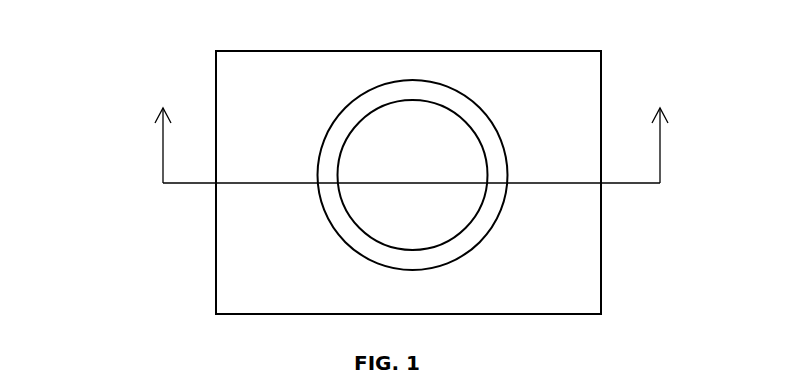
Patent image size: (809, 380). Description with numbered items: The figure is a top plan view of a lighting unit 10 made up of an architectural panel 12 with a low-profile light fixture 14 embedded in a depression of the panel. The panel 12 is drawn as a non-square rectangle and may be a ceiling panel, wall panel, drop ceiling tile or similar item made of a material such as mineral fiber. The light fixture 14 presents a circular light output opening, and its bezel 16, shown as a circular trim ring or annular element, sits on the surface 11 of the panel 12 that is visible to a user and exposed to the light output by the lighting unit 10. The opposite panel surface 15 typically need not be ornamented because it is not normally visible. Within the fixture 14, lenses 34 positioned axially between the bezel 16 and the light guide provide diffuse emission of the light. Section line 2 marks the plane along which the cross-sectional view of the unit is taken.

The lighting unit 10 is at (581, 34).
The bottom surface 11 is at (565, 213).
The architectural panel 12 is at (261, 103).
The low-profile light fixture 14 is at (409, 165).
The bezel 16 is at (480, 235).
The lenses 34 is at (359, 202).
The section line 2 is at (411, 122).
The panel surface 15 is at (15, 377).